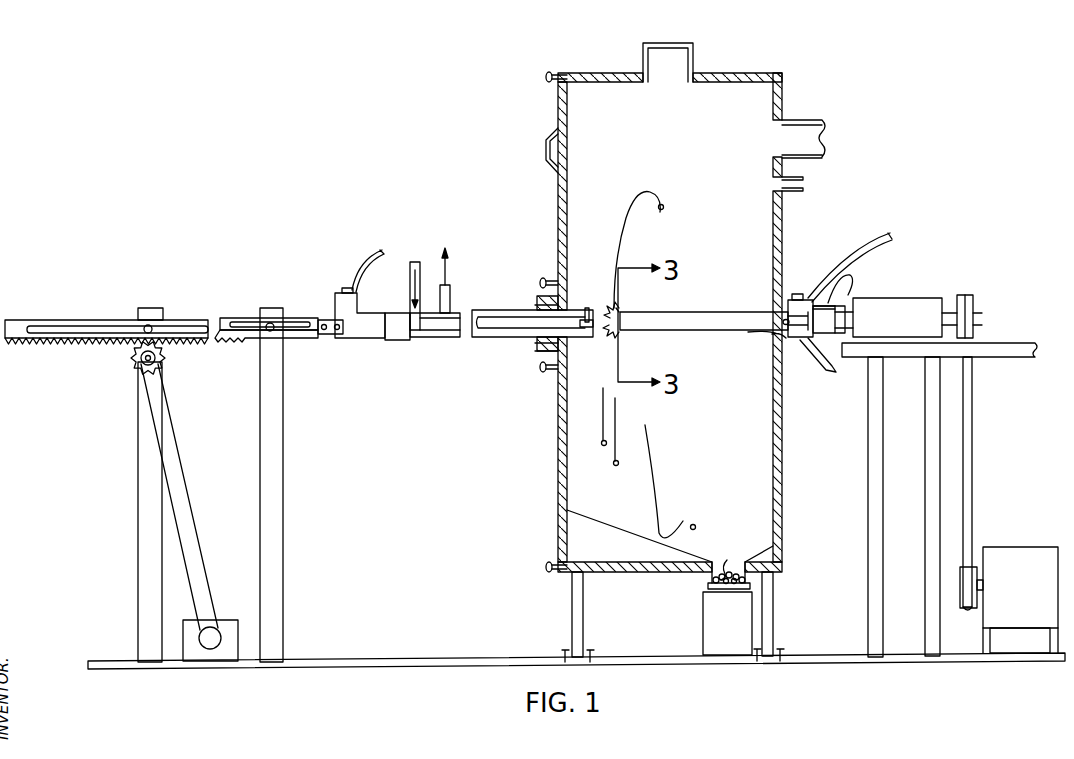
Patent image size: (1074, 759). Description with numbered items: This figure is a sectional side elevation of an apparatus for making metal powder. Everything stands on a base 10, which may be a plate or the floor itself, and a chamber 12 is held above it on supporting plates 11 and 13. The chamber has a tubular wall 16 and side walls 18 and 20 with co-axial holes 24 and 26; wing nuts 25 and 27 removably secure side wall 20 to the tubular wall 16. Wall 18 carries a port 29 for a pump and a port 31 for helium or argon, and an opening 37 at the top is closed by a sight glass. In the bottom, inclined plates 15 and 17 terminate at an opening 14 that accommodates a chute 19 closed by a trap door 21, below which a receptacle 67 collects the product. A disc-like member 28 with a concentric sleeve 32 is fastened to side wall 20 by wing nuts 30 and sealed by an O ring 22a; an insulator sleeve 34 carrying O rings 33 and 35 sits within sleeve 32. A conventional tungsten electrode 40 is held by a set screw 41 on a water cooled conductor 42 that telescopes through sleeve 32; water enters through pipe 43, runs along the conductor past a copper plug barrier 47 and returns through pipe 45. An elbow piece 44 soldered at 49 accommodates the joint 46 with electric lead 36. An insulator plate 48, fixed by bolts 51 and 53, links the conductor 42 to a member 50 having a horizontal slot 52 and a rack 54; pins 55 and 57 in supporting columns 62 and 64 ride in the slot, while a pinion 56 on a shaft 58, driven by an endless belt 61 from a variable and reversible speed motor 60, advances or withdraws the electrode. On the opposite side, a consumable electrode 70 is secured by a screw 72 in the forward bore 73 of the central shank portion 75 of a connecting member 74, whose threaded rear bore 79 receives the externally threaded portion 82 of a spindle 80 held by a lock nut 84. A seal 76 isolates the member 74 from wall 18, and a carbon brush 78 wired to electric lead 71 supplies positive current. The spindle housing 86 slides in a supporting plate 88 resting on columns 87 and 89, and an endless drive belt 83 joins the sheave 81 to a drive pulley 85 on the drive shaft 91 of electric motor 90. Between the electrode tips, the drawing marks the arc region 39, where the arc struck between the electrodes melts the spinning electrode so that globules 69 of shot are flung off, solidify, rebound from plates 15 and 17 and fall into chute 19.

The base 10 is at (450, 653).
The supporting plate 11 is at (775, 612).
The chamber 12 is at (783, 491).
The supporting plate 13 is at (583, 620).
The opening 14 is at (716, 556).
The plate 15 is at (618, 524).
The tubular wall 16 is at (718, 76).
The plate 17 is at (754, 546).
The side wall 18 is at (782, 88).
The chute 19 is at (708, 584).
The side wall 20 is at (558, 452).
The trap door 21 is at (726, 592).
The O ring 22a is at (566, 290).
The hole 24 is at (770, 338).
The wing nut 25 is at (544, 568).
The hole 26 is at (568, 356).
The wing nut 27 is at (544, 76).
The disc-like member 28 is at (540, 354).
The port 29 is at (810, 123).
The wing nuts 30 is at (541, 281).
The port 31 is at (808, 185).
The concentric sleeve 32 is at (538, 350).
The O ring 33 is at (534, 307).
The insulator sleeve 34 is at (536, 344).
The O ring 35 is at (538, 298).
The electric lead 36 is at (380, 248).
The opening 37 is at (667, 43).
The arc 39 is at (622, 310).
The conventional electrode 40 is at (616, 334).
The set screw 41 is at (584, 308).
The water cooled conductor 42 is at (486, 340).
The pipe 43 is at (420, 274).
The elbow piece 44 is at (364, 342).
The pipe 45 is at (450, 296).
The joint 46 is at (348, 286).
The copper plug barrier 47 is at (432, 338).
The insulator plate 48 is at (338, 312).
The silver soldered joint 49 is at (388, 343).
The member 50 is at (248, 318).
The bolt 51 is at (332, 334).
The horizontal slot 52 is at (189, 322).
The bolt 53 is at (322, 336).
The rack 54 is at (186, 350).
The pin 55 is at (148, 324).
The pinion 56 is at (164, 366).
The pin 57 is at (270, 324).
The shaft 58 is at (138, 360).
The variable and reversible speed motor 60 is at (210, 640).
The endless belt 61 is at (182, 460).
The supporting column 62 is at (138, 504).
The supporting column 64 is at (284, 490).
The receptacle 67 is at (727, 623).
The globules (shot) 69 is at (662, 210).
The consumable electrode 70 is at (682, 330).
The electric lead 71 is at (880, 234).
The screw 72 is at (797, 300).
The forward bore 73 is at (743, 337).
The connecting member 74 is at (792, 352).
The central shank portion 75 is at (814, 304).
The seal 76 is at (784, 310).
The carbon brush 78 is at (800, 298).
The rear bore 79 is at (829, 368).
The spindle 80 is at (1000, 309).
The sheave 81 is at (969, 300).
The externally threaded portion 82 is at (853, 302).
The endless drive belt 83 is at (973, 414).
The lock nut 84 is at (845, 296).
The drive pulley 85 is at (974, 616).
The spindle housing 86 is at (897, 317).
The column 87 is at (868, 532).
The supporting plate 88 is at (906, 357).
The column 89 is at (925, 550).
The electric motor 90 is at (1020, 600).
The drive shaft 91 is at (950, 576).